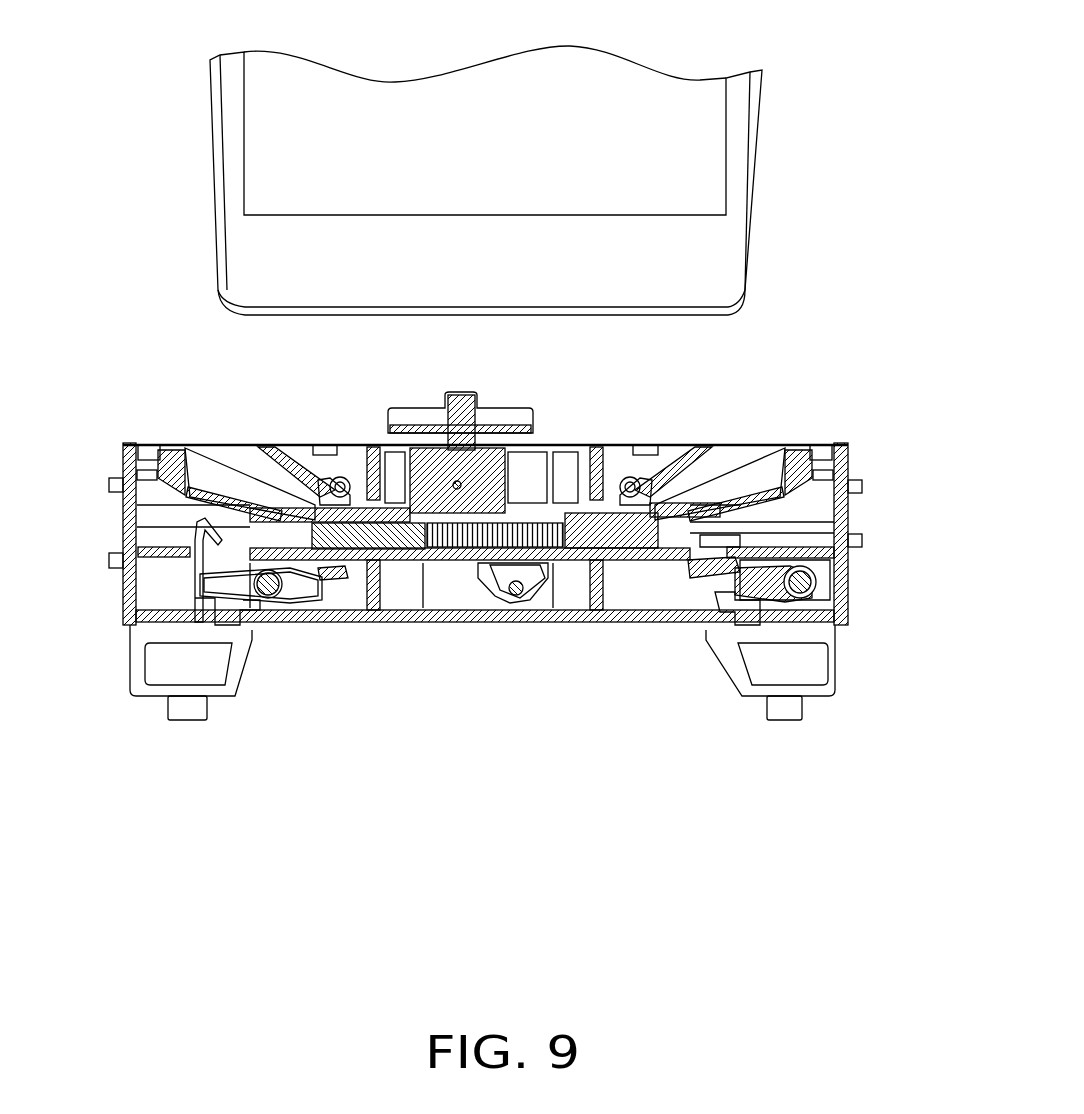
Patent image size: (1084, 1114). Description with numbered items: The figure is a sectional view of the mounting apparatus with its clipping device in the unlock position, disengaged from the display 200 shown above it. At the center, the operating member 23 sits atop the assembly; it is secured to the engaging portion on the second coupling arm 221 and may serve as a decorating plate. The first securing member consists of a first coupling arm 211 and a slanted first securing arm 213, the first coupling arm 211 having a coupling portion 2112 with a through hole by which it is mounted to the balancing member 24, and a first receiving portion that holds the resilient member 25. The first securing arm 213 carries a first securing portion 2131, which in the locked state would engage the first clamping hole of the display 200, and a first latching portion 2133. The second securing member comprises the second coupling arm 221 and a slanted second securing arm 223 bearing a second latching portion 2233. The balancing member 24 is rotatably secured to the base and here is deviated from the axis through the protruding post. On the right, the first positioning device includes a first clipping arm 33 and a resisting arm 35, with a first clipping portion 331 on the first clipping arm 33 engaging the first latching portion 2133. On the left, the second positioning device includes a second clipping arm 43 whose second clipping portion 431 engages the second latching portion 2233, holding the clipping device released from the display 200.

The display 200 is at (731, 228).
The operating member 23 is at (457, 398).
The second coupling arm 221 is at (330, 497).
The second securing arm 223 is at (165, 450).
The first securing portion 2131 is at (782, 448).
The first securing arm 213 is at (752, 497).
The first latching portion 2133 is at (735, 537).
The second clipping arm 43 is at (190, 590).
The second latching portion 2233 is at (303, 585).
The second clipping portion 431 is at (330, 578).
The resilient member 25 is at (452, 550).
The balancing member 24 is at (490, 578).
The coupling portion 2112 is at (522, 592).
The first coupling arm 211 is at (618, 552).
The first clipping portion 331 is at (697, 575).
The first clipping arm 33 is at (793, 602).
The resisting arm 35 is at (730, 598).